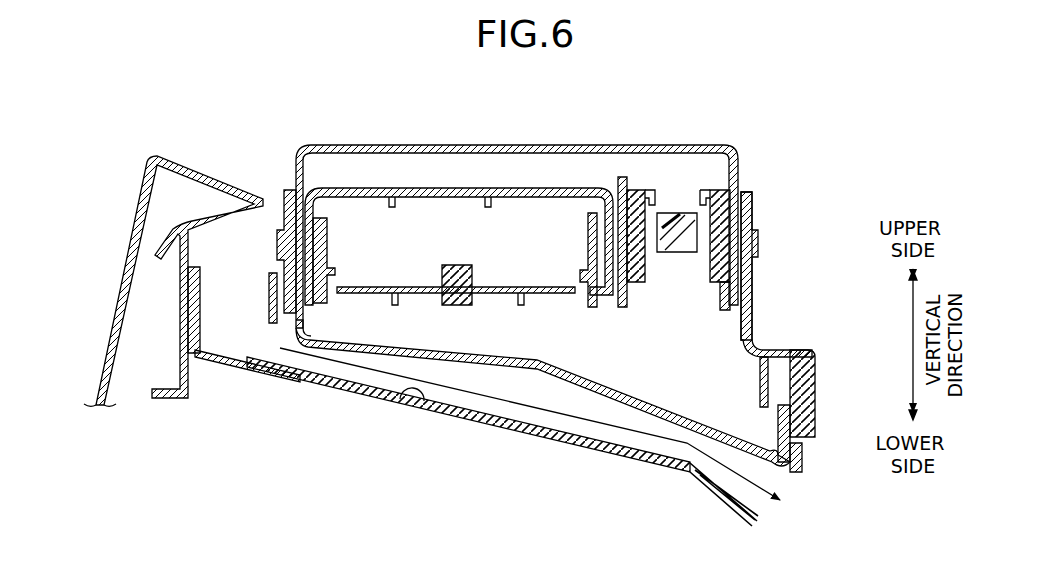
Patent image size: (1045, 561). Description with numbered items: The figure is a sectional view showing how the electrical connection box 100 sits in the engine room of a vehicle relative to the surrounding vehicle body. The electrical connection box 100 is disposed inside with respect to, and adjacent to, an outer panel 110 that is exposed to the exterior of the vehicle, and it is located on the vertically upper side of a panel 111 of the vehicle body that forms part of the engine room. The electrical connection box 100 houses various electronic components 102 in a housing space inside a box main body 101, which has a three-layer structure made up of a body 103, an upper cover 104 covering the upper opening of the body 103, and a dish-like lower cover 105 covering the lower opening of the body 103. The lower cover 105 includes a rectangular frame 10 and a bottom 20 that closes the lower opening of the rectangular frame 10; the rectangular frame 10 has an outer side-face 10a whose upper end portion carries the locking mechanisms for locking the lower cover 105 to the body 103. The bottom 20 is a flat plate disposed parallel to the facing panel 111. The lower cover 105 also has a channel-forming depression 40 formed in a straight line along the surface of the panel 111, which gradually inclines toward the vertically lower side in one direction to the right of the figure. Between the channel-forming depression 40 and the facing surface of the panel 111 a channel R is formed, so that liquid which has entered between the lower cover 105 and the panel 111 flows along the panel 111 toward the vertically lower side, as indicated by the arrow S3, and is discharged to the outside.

The outer panel 110 is at (130, 226).
The electrical connection box 100 is at (686, 136).
The electronic components 102 is at (500, 186).
The upper cover 104 is at (739, 175).
The body 103 is at (752, 280).
The box main body 101 is at (847, 300).
The lower cover 105 is at (805, 453).
The channel-forming depression 40 is at (565, 386).
The rectangular frame 10 is at (268, 322).
The outer side-face 10a is at (305, 334).
The panel 111 is at (402, 408).
The channel R is at (464, 403).
The arrow S3 is at (513, 403).
The bottom 20 is at (643, 423).